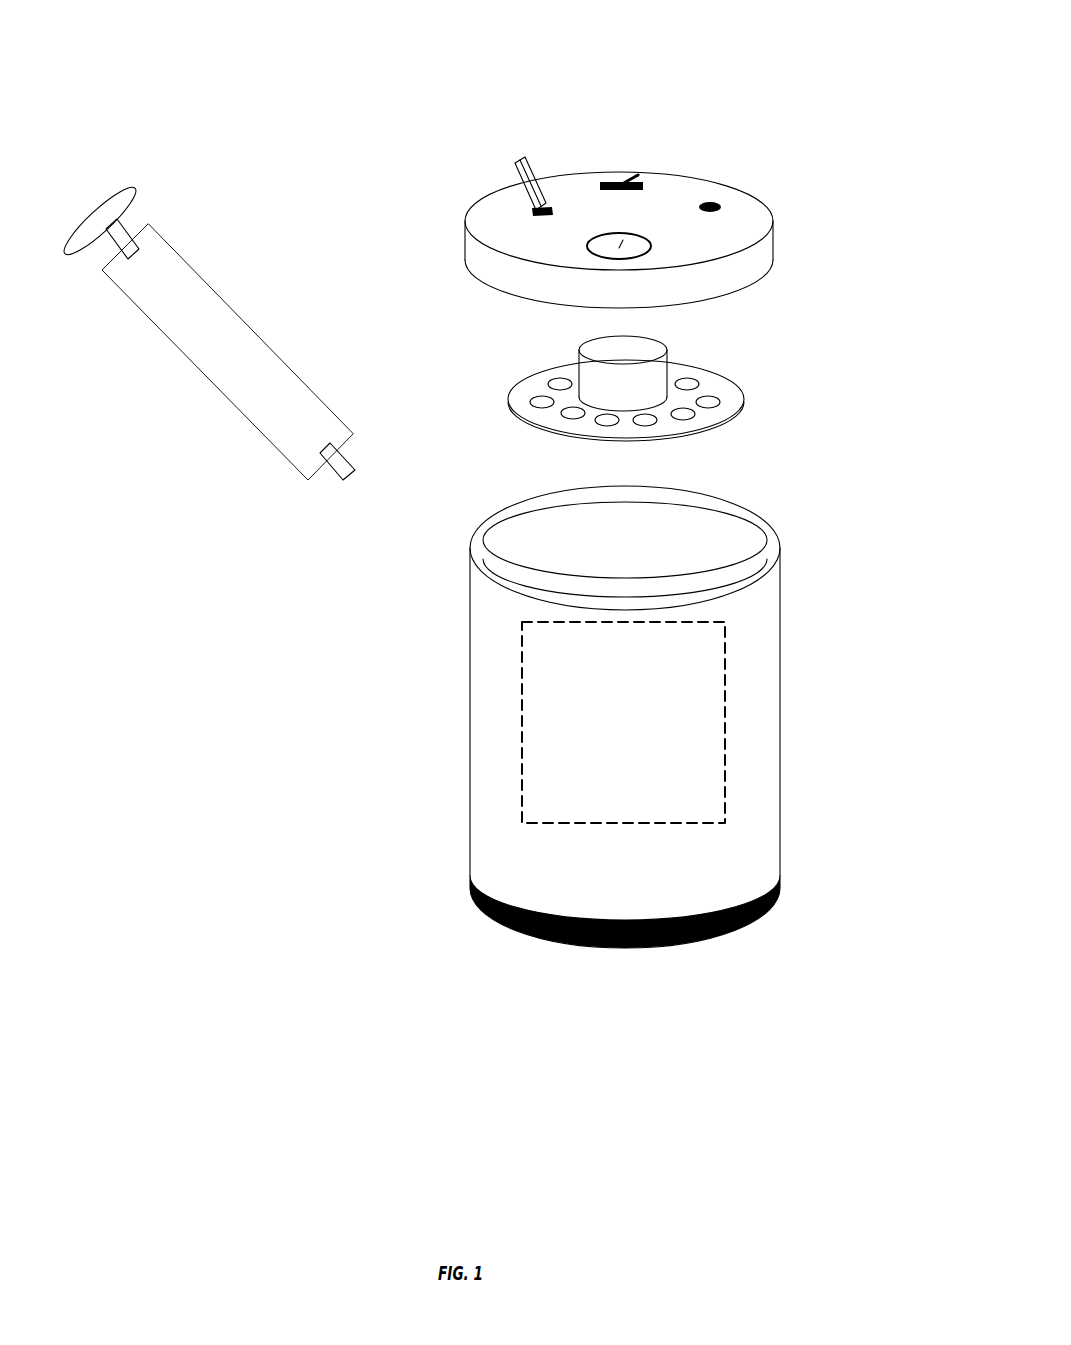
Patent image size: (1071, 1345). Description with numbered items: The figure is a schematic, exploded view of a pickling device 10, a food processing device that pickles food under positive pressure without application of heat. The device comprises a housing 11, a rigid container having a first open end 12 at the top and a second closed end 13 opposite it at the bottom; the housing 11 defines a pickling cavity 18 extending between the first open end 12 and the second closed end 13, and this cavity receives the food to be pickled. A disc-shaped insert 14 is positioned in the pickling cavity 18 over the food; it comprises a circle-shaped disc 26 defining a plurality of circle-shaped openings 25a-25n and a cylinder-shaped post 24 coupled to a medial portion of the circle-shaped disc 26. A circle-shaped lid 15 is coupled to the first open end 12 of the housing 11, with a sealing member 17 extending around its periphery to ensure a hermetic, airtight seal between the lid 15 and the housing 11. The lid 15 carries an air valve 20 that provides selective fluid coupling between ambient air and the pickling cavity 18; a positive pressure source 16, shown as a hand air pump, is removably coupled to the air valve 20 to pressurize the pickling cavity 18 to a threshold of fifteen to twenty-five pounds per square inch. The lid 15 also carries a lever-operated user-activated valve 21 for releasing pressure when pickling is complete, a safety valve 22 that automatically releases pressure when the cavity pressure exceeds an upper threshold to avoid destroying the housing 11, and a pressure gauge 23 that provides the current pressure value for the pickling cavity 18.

The pickling device 10 is at (163, 94).
The housing 11 is at (452, 760).
The first open end 12 is at (548, 552).
The second closed end 13 is at (525, 930).
The disc-shaped insert 14 is at (729, 389).
The lid 15 is at (779, 215).
The positive pressure source 16 is at (155, 288).
The sealing member 17 is at (548, 292).
The pickling cavity 18 is at (638, 735).
The air valve 20 is at (518, 178).
The user-activated valve 21 is at (622, 180).
The safety valve 22 is at (708, 202).
The pressure gauge 23 is at (602, 251).
The cylinder-shaped post 24 is at (600, 345).
The plurality of openings 25a-25n is at (535, 416).
The circle-shaped disc 26 is at (673, 400).